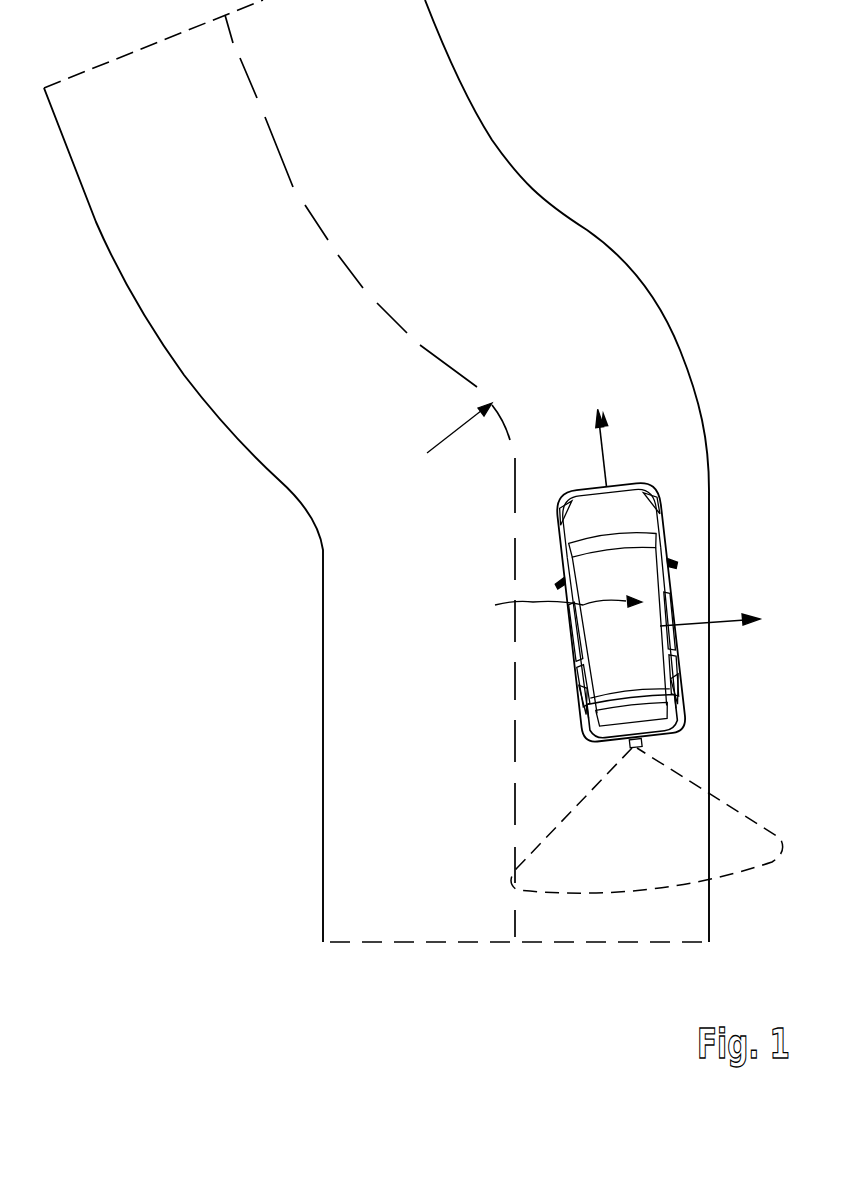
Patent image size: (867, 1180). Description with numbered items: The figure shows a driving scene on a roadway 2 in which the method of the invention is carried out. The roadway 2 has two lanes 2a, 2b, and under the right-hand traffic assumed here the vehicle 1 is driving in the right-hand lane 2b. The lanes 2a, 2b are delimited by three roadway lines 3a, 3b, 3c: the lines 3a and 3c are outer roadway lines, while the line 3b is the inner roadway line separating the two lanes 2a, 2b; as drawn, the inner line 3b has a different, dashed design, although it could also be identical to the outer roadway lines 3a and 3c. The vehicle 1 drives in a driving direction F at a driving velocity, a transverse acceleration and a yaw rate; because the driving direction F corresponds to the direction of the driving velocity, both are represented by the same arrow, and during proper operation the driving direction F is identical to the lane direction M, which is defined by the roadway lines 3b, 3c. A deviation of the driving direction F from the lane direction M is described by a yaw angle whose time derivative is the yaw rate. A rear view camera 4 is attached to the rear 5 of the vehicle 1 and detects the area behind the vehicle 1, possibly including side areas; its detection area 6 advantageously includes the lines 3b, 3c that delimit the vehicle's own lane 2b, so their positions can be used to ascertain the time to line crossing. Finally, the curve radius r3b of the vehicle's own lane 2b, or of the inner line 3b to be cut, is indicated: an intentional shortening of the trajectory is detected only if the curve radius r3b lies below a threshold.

The vehicle 1 is at (609, 598).
The roadway 2 is at (414, 478).
The lane 2a is at (183, 471).
The lane 2b is at (557, 471).
The roadway line 3a is at (323, 685).
The roadway line 3b is at (516, 683).
The roadway line 3c is at (709, 755).
The rear view camera 4 is at (635, 743).
The rear 5 is at (633, 715).
The detection area 6 is at (730, 803).
The curve radius r3b is at (437, 438).
The driving direction F is at (547, 412).
The lane direction M is at (601, 417).